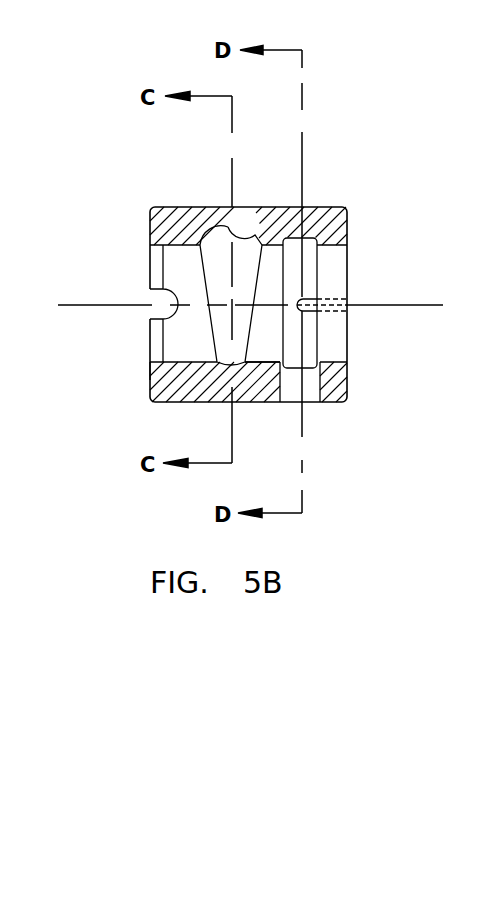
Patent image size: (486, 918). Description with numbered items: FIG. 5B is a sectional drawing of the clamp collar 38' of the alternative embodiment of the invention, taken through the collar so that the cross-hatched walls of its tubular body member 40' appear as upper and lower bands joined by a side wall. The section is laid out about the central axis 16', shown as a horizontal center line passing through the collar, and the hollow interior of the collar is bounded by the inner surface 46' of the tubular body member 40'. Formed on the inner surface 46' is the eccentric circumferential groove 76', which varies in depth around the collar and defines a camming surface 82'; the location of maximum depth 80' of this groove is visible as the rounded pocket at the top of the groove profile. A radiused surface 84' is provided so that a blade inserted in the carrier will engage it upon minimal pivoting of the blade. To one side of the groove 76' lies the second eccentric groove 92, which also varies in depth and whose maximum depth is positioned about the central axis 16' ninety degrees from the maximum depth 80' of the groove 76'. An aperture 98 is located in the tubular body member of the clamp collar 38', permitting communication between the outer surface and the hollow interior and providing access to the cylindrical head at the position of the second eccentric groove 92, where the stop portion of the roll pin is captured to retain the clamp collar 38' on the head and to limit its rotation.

The central axis 16' is at (205, 304).
The tubular body member 40' is at (248, 200).
The clamp collar 38' is at (237, 403).
The radiused surface 84' is at (113, 375).
The eccentric circumferential groove 76' is at (167, 305).
The camming surface 82' is at (167, 248).
The maximum depth of eccentric groove 80' is at (255, 195).
The second eccentric groove 92 is at (308, 272).
The aperture 98 is at (307, 388).
The inner surface 46' is at (324, 339).